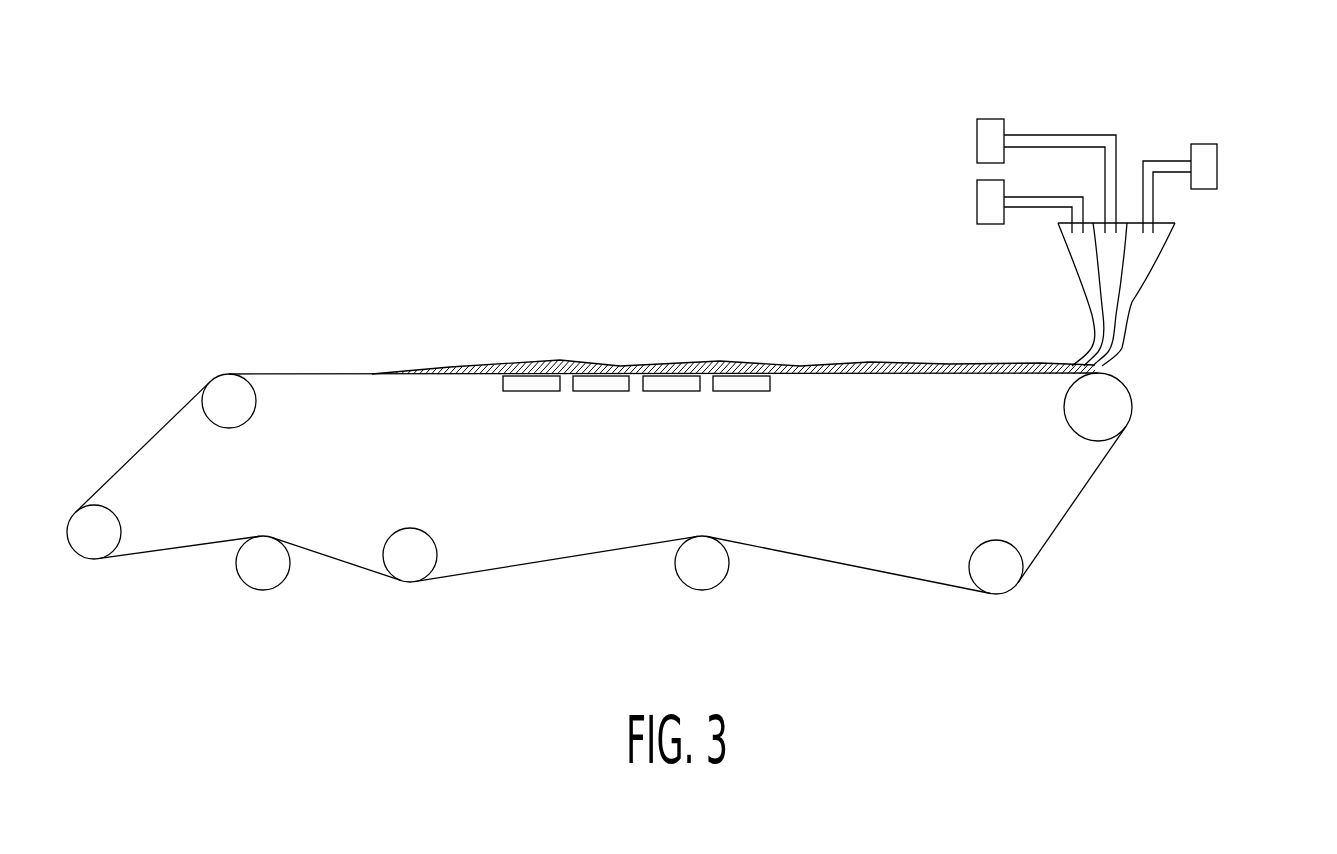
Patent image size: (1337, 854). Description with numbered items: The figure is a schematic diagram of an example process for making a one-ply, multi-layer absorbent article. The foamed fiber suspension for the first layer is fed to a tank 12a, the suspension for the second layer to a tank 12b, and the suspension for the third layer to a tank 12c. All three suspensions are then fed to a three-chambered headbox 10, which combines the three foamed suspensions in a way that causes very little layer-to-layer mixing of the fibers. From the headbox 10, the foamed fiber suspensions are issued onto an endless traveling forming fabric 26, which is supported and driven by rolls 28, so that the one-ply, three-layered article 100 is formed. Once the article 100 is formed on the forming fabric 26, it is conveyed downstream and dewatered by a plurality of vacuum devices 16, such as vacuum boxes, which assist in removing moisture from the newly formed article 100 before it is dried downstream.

The three-chambered headbox 10 is at (1133, 303).
The tank 12a is at (977, 138).
The tank 12b is at (977, 202).
The tank 12c is at (1217, 172).
The vacuum devices 16 is at (608, 391).
The forming fabric 26 is at (852, 377).
The rolls 28 is at (216, 413).
The one-ply, three-layered article 100 is at (917, 363).